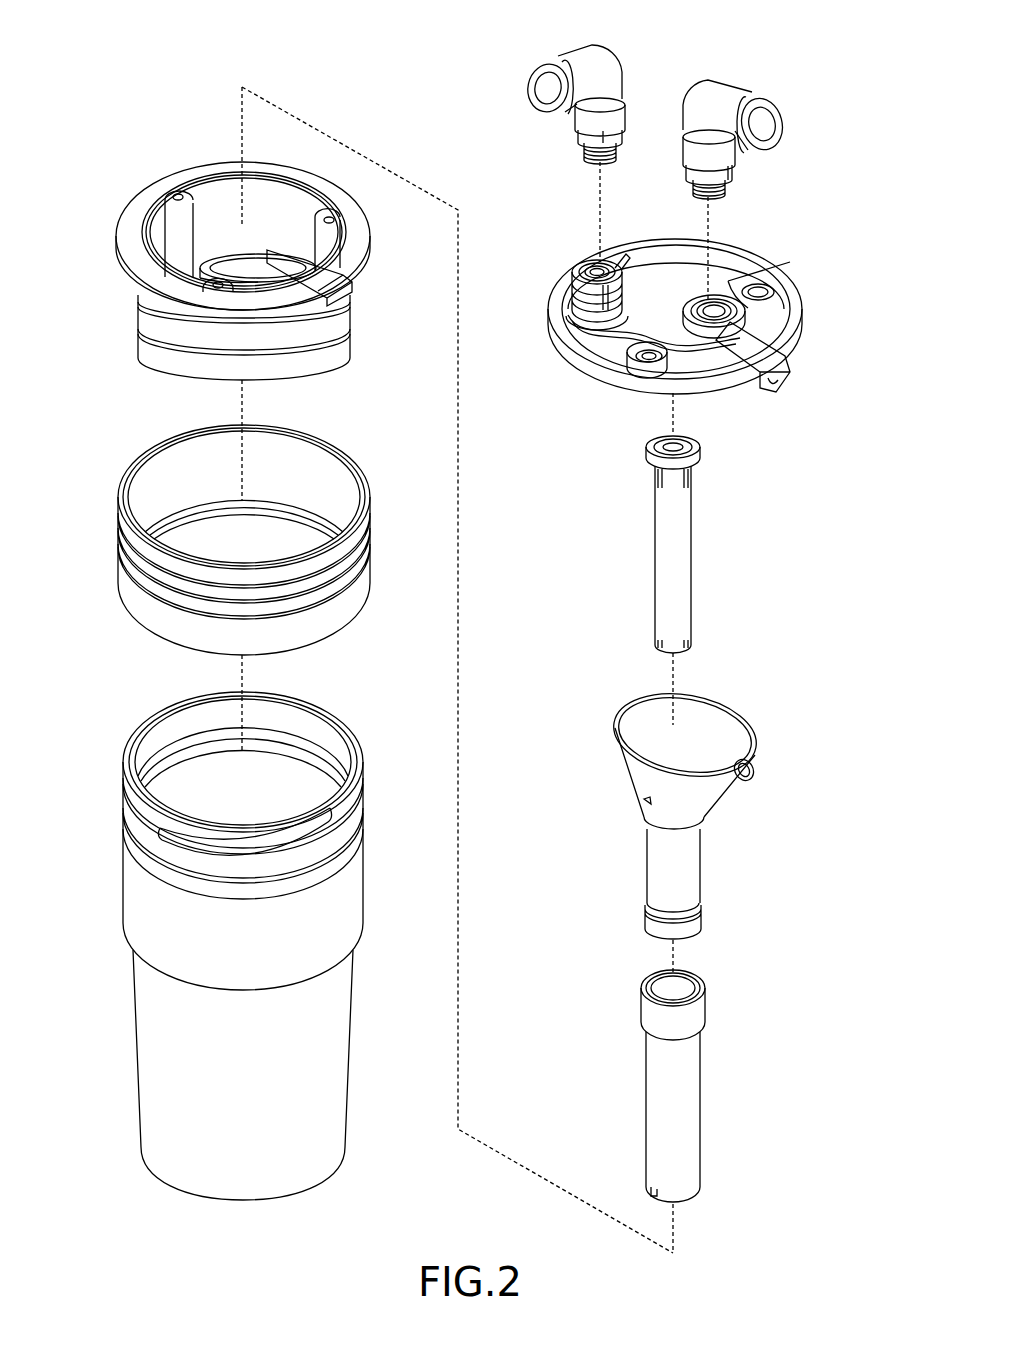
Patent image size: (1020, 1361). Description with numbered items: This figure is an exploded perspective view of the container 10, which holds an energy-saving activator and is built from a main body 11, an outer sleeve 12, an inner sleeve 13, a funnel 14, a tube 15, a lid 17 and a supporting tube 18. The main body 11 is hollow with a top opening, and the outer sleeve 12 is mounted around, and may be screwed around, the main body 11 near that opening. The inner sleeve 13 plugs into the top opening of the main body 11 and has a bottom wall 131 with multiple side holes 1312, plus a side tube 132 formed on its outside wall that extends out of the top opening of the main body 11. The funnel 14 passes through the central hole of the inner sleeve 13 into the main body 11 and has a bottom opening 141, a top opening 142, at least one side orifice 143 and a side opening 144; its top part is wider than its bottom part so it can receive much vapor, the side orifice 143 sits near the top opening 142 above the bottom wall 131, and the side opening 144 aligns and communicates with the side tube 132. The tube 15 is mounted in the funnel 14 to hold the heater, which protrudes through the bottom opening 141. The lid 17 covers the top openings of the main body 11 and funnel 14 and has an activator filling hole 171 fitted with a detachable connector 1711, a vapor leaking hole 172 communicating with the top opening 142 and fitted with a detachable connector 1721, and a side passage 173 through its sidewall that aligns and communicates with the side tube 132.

The container 10 is at (142, 70).
The main body 11 is at (161, 1062).
The outer sleeve 12 is at (160, 617).
The inner sleeve 13 is at (130, 227).
The bottom wall 131 is at (200, 203).
The side holes 1312 is at (272, 278).
The side tube 132 is at (350, 272).
The funnel 14 is at (689, 852).
The bottom opening 141 is at (689, 927).
The top opening 142 is at (702, 713).
The side orifice 143 is at (648, 801).
The side opening 144 is at (752, 775).
The tube 15 is at (680, 550).
The lid 17 is at (737, 257).
The activator filling hole 171 is at (596, 262).
The connector 1711 is at (580, 118).
The vapor leaking hole 172 is at (737, 297).
The connector 1721 is at (747, 100).
The side passage 173 is at (770, 377).
The supporting tube 18 is at (687, 1103).